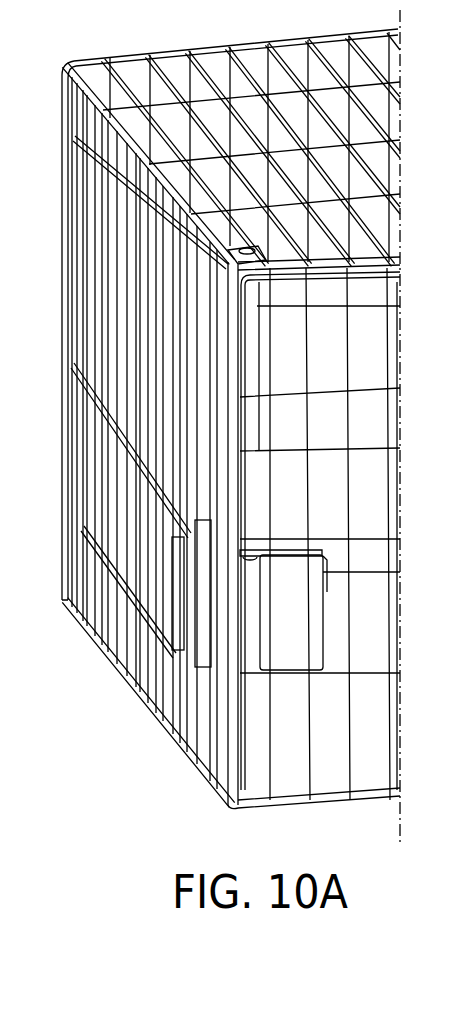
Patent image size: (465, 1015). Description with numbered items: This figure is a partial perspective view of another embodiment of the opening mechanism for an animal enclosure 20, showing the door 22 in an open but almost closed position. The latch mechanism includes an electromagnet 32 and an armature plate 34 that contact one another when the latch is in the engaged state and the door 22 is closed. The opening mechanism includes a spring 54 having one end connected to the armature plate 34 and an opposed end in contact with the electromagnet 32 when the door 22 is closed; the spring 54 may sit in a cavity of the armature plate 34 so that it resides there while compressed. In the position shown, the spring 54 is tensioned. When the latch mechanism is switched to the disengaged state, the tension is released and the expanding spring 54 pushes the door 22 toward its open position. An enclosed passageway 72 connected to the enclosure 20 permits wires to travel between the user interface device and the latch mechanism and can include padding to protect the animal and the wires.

The enclosure 20 is at (365, 800).
The door 22 is at (150, 722).
The electromagnet 32 is at (299, 529).
The armature plate 34 is at (198, 540).
The spring 54 is at (217, 590).
The passageway 72 is at (247, 375).